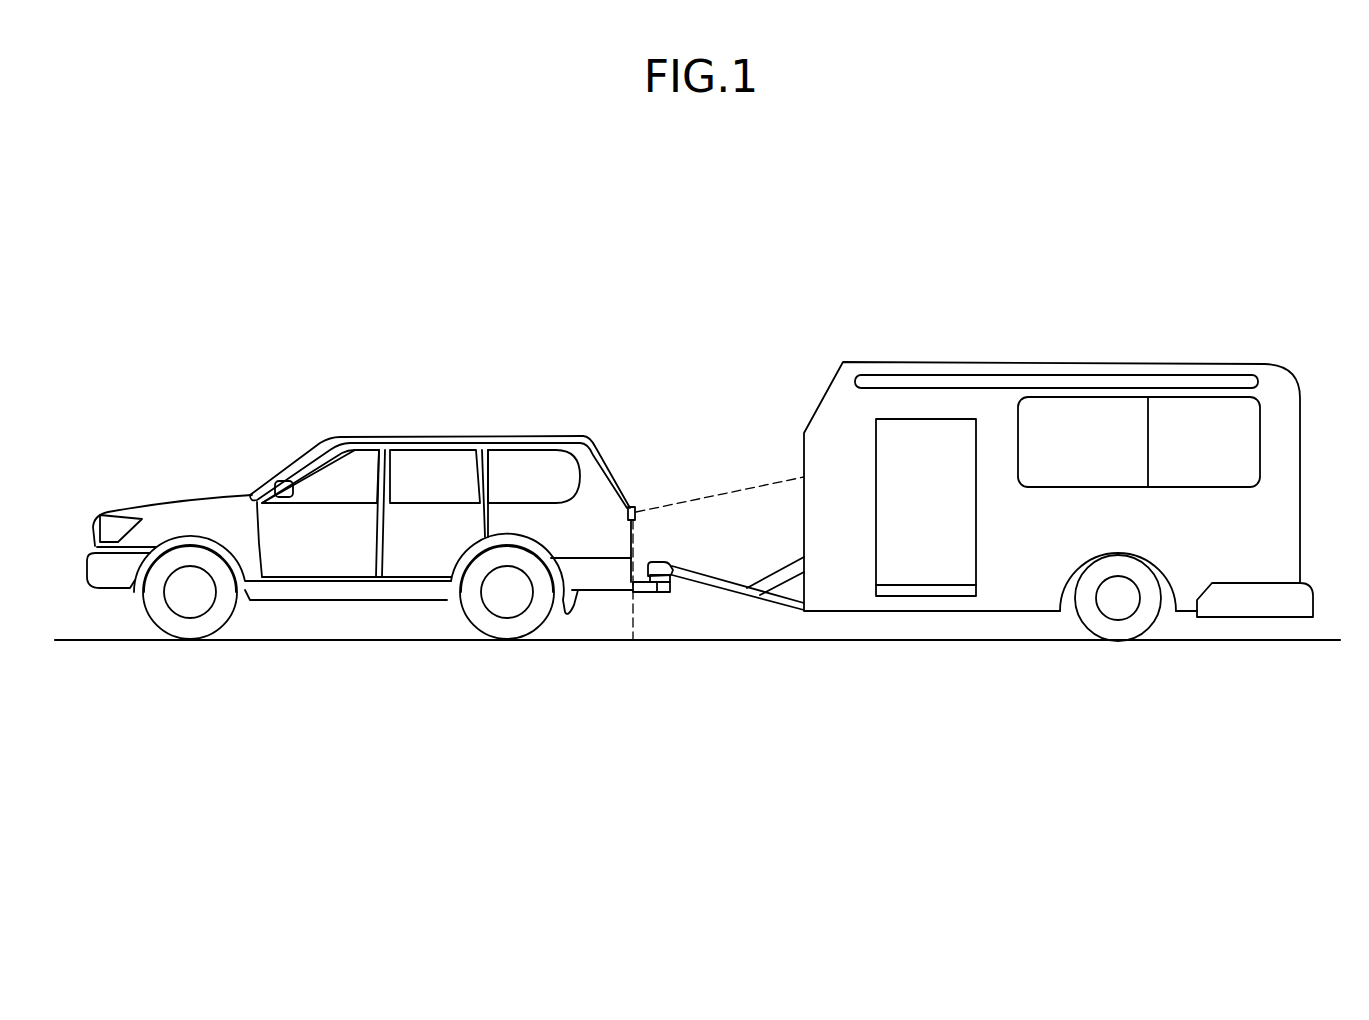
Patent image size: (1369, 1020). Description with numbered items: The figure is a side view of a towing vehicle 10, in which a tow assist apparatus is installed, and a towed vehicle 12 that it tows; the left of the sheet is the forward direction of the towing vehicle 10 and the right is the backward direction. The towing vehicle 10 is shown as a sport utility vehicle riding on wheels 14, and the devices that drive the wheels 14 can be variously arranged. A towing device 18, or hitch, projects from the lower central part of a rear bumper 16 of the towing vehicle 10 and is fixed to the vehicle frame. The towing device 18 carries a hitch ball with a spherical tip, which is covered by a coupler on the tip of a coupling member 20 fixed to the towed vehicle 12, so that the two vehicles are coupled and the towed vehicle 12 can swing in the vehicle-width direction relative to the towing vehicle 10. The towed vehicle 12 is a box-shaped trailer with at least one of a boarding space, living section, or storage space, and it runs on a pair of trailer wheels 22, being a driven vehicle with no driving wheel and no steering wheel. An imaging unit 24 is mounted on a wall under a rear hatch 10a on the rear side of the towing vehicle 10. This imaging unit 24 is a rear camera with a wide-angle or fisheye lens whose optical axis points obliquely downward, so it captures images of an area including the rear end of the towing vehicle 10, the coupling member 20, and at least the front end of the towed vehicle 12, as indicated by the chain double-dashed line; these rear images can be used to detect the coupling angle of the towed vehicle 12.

The towing vehicle 10 is at (445, 526).
The rear hatch 10a is at (622, 500).
The towed vehicle 12 is at (980, 492).
The wheels 14 is at (192, 605).
The rear bumper 16 is at (612, 577).
The towing device 18 is at (658, 593).
The coupling member 20 is at (762, 598).
The trailer wheels 22 is at (1117, 603).
The imaging unit 24 is at (634, 507).